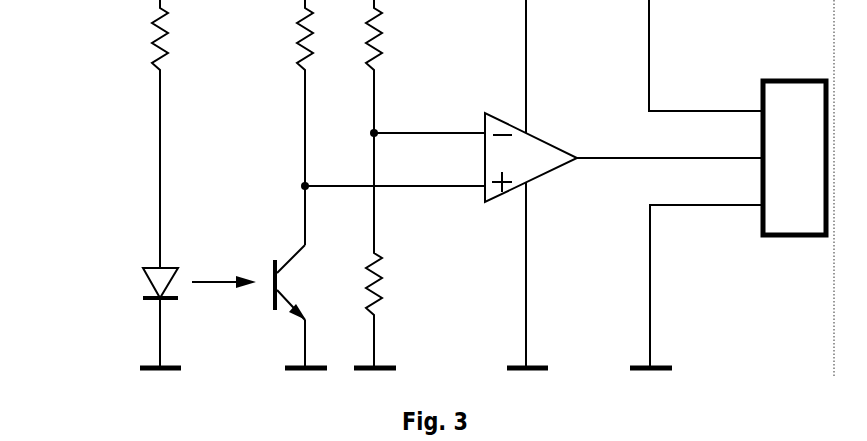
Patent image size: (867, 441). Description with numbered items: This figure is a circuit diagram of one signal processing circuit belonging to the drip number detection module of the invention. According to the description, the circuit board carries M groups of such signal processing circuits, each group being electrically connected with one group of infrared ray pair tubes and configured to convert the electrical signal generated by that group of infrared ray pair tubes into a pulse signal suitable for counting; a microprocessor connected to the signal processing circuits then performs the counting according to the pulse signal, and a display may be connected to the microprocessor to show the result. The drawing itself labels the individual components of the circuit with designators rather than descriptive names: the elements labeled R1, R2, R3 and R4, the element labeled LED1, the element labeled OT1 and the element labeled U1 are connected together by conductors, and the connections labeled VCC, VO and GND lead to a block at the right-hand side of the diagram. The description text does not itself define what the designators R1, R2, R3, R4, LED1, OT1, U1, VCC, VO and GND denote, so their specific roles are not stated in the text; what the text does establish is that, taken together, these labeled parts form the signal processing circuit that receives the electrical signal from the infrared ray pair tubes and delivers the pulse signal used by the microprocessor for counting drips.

The resistor R1 is at (132, 36).
The resistor R2 is at (275, 36).
The resistor R3 is at (404, 36).
The resistor R4 is at (403, 284).
The light emitting diode LED1 is at (145, 286).
The phototransistor OT1 is at (267, 263).
The comparator / operational amplifier U1 is at (533, 134).
The supply voltage pin VCC is at (705, 55).
The output pin VO is at (699, 139).
The ground pin GND is at (696, 267).